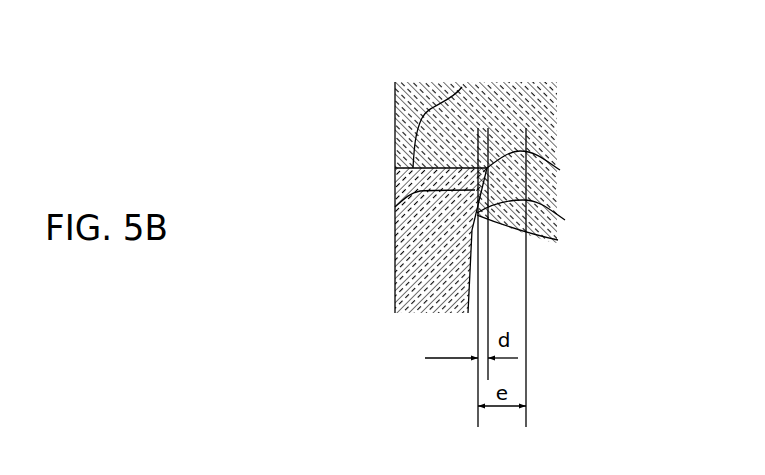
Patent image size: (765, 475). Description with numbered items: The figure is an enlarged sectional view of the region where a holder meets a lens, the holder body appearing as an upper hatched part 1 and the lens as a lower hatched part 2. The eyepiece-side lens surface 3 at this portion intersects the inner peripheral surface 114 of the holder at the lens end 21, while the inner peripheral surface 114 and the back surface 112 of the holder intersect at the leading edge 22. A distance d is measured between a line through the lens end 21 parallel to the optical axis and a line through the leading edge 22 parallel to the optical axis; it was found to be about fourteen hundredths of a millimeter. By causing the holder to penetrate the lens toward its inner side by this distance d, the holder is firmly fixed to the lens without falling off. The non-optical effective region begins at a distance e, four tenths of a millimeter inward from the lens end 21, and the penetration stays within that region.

The first member (body) 1 is at (526, 100).
The second member 2 is at (435, 288).
The eyepiece-side lens surface 3 is at (536, 232).
The lens end 21 is at (565, 220).
The leading edge 22 is at (560, 170).
The back surface of the holder 112 is at (462, 87).
The inner peripheral surface of the holder 114 is at (395, 207).